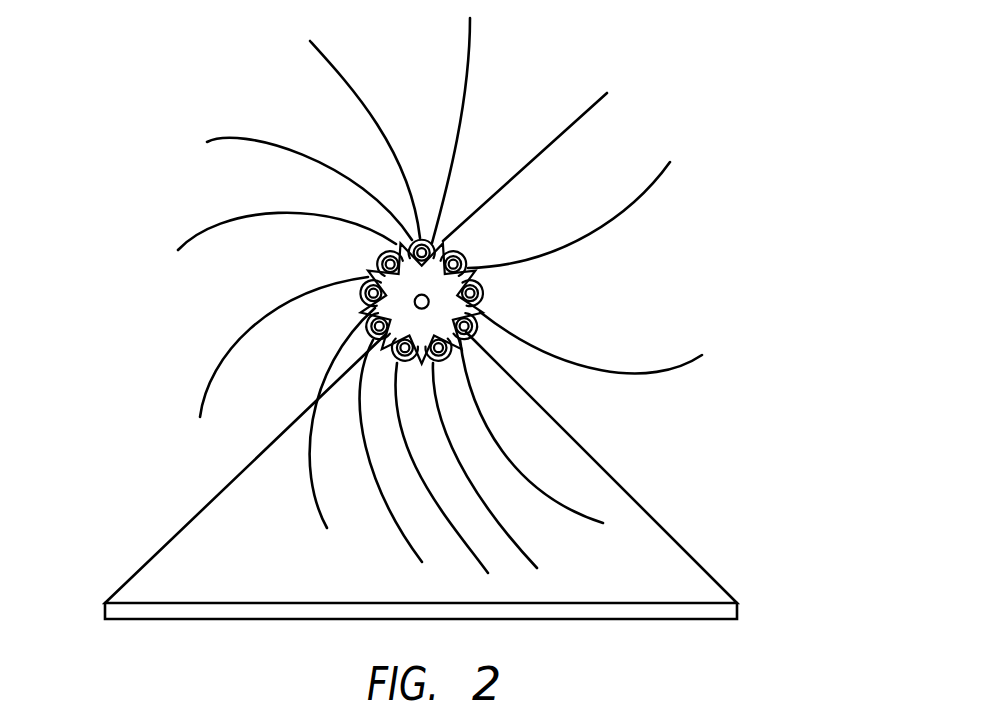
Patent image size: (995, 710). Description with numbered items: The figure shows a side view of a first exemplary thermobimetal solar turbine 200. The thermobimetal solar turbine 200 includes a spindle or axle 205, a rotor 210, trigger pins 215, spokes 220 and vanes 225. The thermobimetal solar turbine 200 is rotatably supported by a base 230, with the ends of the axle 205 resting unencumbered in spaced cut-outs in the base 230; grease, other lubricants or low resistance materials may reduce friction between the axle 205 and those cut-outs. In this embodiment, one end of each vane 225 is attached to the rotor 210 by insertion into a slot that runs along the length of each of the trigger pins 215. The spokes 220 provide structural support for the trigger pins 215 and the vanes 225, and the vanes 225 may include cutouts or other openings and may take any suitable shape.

The thermobimetal solar turbine 200 is at (170, 183).
The axle 205 is at (483, 305).
The rotor 210 is at (387, 310).
The trigger pins 215 is at (485, 288).
The spokes 220 is at (375, 266).
The vanes 225 is at (650, 205).
The base 230 is at (517, 415).